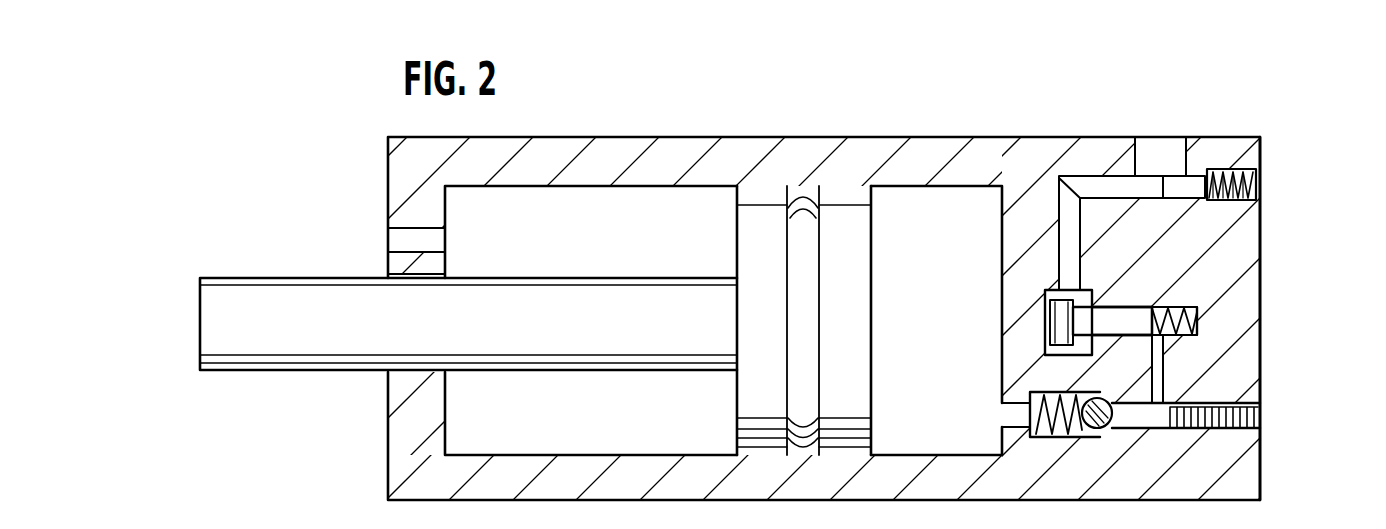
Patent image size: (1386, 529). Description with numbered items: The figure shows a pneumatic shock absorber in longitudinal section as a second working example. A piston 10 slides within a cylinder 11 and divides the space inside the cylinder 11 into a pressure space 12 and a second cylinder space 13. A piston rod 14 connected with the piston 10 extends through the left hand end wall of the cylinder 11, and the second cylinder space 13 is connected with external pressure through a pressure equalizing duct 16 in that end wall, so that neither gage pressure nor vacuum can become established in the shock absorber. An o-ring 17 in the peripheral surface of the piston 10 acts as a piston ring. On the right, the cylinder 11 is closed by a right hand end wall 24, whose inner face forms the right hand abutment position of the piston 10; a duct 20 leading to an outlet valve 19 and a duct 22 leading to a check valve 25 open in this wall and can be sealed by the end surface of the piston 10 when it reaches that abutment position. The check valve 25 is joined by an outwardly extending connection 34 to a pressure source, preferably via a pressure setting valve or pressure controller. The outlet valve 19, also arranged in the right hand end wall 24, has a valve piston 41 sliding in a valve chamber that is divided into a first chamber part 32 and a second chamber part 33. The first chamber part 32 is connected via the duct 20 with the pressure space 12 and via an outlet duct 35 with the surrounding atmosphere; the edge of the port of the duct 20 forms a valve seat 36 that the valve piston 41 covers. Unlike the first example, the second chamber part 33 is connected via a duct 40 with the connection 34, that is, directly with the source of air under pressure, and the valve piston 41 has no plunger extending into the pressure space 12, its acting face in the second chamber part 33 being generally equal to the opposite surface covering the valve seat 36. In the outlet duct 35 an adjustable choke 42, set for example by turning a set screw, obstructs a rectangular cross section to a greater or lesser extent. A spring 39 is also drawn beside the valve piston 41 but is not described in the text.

The piston 10 is at (754, 208).
The cylinder 11 is at (637, 160).
The pressure space 12 is at (927, 251).
The second cylinder space 13 is at (625, 255).
The piston rod 14 is at (262, 302).
The pressure equalizing duct 16 is at (405, 239).
The o-ring 17 is at (803, 205).
The outlet valve 19 is at (1126, 350).
The duct 20 is at (1045, 331).
The duct 22 is at (1030, 412).
The right hand end wall 24 is at (1200, 470).
The check valve 25 is at (1070, 444).
The first chamber part 32 is at (1050, 292).
The second chamber part 33 is at (1193, 305).
The connection 34 is at (1258, 421).
The outlet duct 35 is at (1100, 187).
The valve seat 36 is at (1048, 313).
The valve spring 39 is at (1200, 333).
The duct 40 is at (1166, 368).
The valve piston 41 is at (1134, 311).
The adjustable choke 42 is at (1258, 180).